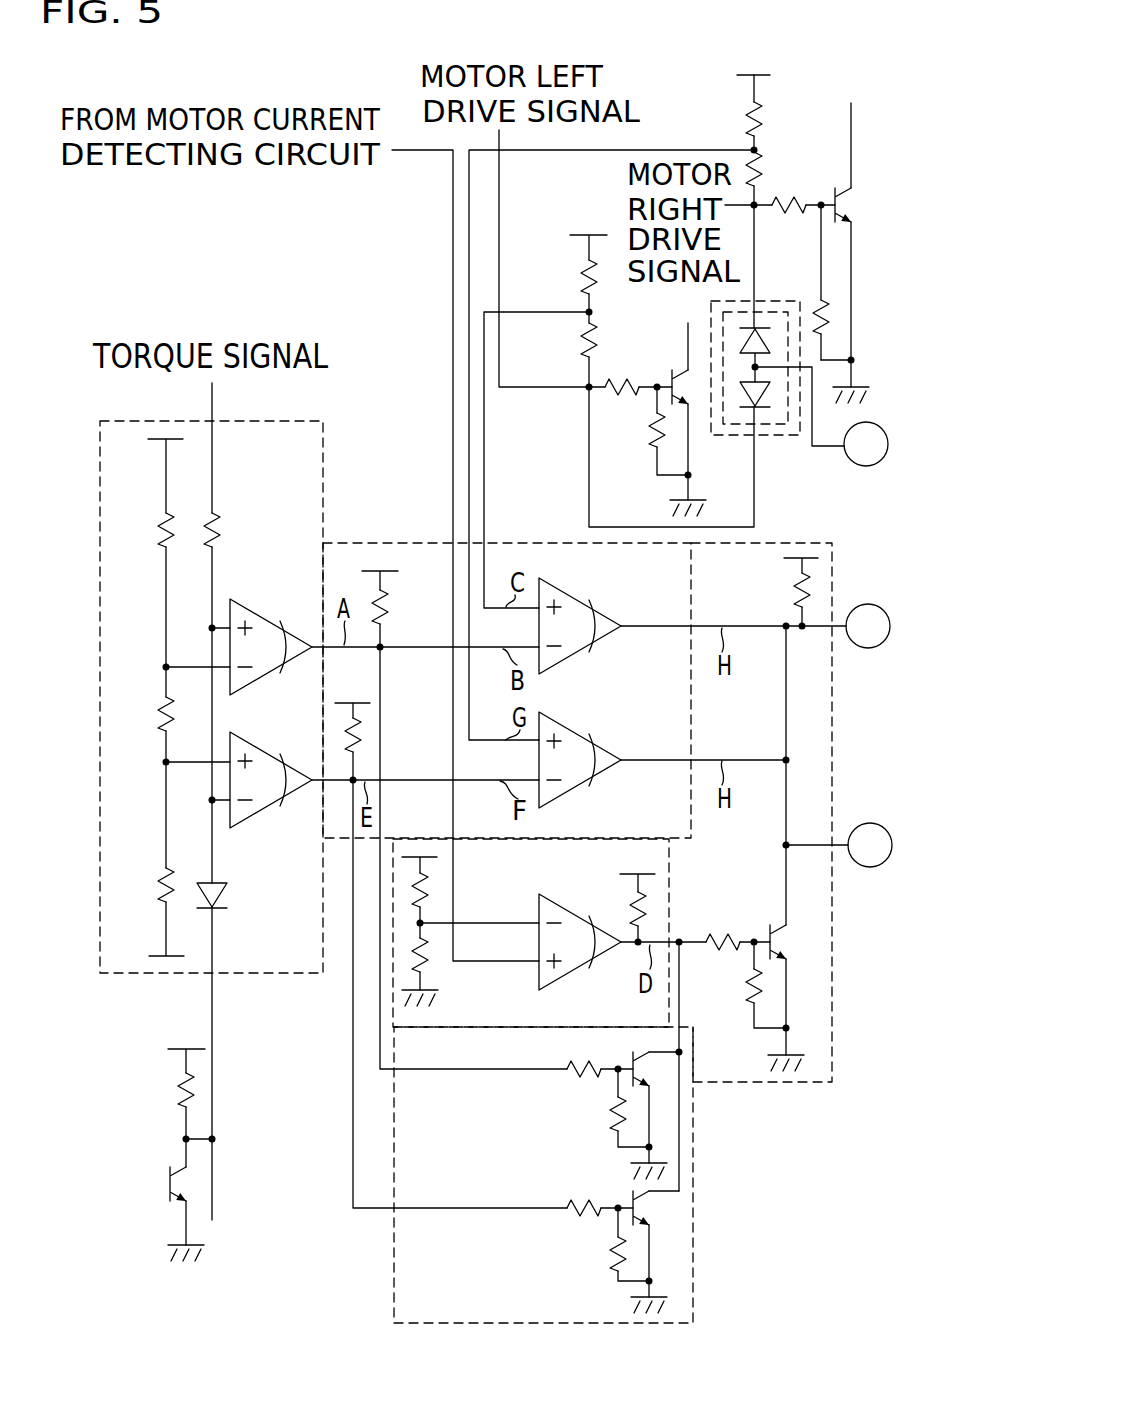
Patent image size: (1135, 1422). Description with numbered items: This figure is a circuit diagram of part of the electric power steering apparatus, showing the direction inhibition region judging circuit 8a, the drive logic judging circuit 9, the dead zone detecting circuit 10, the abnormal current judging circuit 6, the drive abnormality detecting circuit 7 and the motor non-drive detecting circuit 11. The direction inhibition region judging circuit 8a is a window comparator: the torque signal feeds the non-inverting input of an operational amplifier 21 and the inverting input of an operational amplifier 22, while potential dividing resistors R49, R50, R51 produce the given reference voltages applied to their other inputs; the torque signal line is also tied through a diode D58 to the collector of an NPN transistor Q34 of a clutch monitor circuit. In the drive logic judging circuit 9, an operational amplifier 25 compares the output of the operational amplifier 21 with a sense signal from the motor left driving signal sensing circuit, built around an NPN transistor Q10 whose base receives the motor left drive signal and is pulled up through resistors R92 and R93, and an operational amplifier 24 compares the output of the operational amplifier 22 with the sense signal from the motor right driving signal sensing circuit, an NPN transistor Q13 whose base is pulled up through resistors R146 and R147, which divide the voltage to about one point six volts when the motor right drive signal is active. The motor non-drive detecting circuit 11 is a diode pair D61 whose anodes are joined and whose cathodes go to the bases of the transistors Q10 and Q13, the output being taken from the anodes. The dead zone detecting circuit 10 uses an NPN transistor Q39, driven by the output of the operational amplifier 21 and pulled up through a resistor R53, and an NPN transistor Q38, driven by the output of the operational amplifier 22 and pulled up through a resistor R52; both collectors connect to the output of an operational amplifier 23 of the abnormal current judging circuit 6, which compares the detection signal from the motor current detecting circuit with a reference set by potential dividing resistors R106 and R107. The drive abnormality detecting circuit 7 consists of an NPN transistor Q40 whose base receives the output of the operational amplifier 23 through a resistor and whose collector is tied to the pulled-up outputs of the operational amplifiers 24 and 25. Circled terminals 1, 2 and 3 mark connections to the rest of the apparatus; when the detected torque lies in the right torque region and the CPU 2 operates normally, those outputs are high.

The abnormal current judging circuit 6 is at (390, 1005).
The drive abnormality detecting circuit 7 is at (745, 1083).
The direction inhibition region judging circuit 8a is at (298, 420).
The drive logic judging circuit 9 is at (402, 542).
The dead zone detecting circuit 10 is at (394, 1260).
The motor non-drive detecting circuit 11 is at (729, 437).
The operational amplifier 21 is at (258, 686).
The operational amplifier 22 is at (258, 818).
The operational amplifier 23 is at (568, 980).
The operational amplifier 24 is at (576, 788).
The operational amplifier 25 is at (576, 654).
The terminal 1 is at (866, 444).
The CPU 2 is at (868, 626).
The terminal 3 is at (870, 845).
The potential dividing resistor R49 is at (160, 516).
The potential dividing resistor R50 is at (160, 697).
The potential dividing resistor R51 is at (162, 871).
The resistor R52 is at (362, 726).
The resistor R53 is at (368, 599).
The resistor R92 is at (580, 273).
The resistor R93 is at (599, 329).
The potential dividing resistor R106 is at (440, 884).
The potential dividing resistor R107 is at (434, 966).
The resistor R146 is at (762, 120).
The resistor R147 is at (762, 166).
The NPN transistor Q10 is at (669, 370).
The NPN transistor Q13 is at (832, 197).
The NPN transistor Q34 is at (166, 1174).
The NPN transistor Q38 is at (632, 1196).
The NPN transistor Q39 is at (628, 1058).
The NPN transistor Q40 is at (768, 931).
The diode D58 is at (222, 897).
The diode pair D61 is at (770, 424).